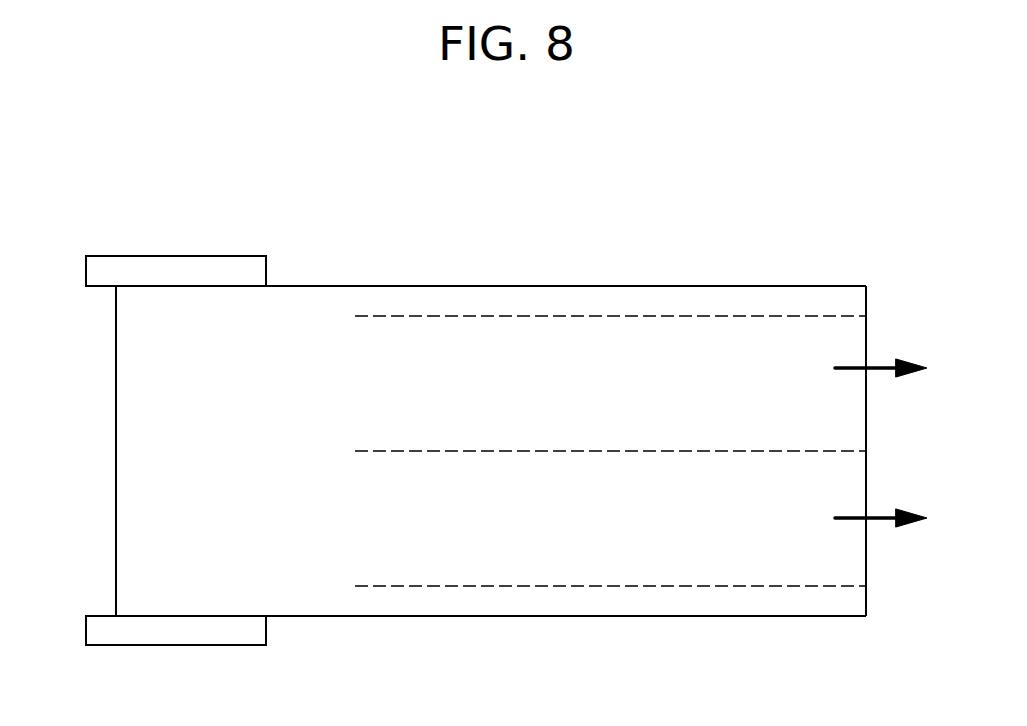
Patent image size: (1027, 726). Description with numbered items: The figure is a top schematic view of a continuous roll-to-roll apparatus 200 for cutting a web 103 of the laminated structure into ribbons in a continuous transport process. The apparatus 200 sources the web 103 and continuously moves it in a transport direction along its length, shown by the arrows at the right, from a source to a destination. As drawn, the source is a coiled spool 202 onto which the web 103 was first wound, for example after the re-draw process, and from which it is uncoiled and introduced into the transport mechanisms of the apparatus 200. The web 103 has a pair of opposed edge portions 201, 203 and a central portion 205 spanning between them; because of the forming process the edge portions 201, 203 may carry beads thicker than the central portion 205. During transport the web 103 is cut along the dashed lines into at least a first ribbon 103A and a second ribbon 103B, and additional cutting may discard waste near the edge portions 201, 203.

The continuous roll-to-roll apparatus 200 is at (530, 179).
The web 103 is at (115, 452).
The first ribbon 103A is at (747, 345).
The second ribbon 103B is at (731, 540).
The edge portion 201 is at (642, 616).
The coiled spool 202 is at (220, 253).
The edge portion 203 is at (641, 286).
The central portion 205 is at (265, 493).